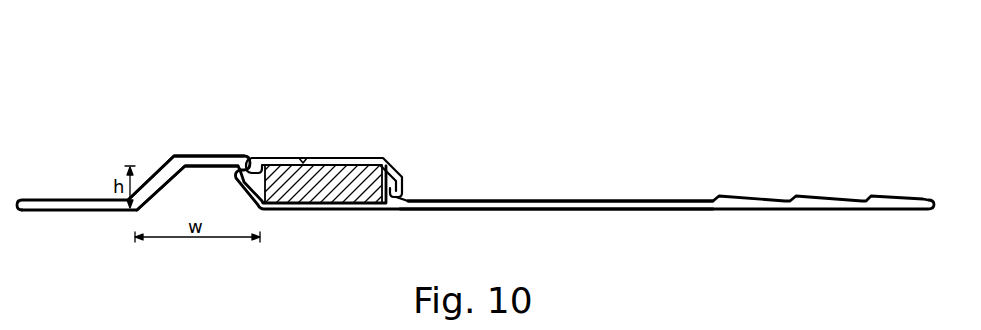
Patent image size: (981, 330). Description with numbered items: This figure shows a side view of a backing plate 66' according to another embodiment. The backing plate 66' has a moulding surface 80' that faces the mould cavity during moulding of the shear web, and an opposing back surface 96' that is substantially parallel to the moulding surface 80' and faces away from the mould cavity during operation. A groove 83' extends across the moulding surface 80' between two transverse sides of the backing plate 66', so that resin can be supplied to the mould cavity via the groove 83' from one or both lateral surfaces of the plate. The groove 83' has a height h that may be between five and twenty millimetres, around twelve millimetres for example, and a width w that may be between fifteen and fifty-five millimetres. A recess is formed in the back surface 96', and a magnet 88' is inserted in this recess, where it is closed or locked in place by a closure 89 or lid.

The backing plate 66' is at (189, 58).
The moulding surface 80' is at (475, 164).
The groove 83' is at (168, 162).
The magnet 88' is at (338, 139).
The closure 89 is at (271, 158).
The back surface 96' is at (556, 159).